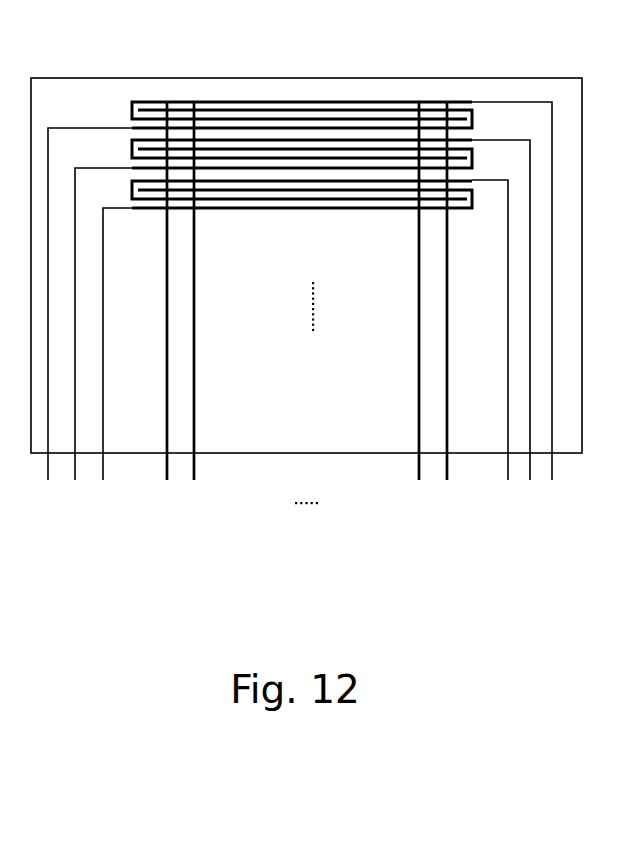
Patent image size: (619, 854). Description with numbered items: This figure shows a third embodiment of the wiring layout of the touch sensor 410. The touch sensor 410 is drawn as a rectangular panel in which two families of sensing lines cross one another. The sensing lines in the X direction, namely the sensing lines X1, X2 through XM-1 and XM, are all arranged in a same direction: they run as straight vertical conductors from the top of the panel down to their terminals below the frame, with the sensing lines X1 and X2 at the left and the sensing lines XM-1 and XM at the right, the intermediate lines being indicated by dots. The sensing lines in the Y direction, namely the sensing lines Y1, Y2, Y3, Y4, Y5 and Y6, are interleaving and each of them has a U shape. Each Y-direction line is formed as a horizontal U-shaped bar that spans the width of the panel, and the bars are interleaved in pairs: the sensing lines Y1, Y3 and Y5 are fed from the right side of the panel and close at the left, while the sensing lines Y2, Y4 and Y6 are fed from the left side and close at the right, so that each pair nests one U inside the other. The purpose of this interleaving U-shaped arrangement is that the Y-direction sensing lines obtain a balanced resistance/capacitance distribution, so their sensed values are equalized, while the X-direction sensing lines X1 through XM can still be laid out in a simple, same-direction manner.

The touch sensor 410 is at (303, 78).
The sensing line Y1 is at (349, 306).
The sensing line Y2 is at (254, 310).
The sensing line Y3 is at (335, 325).
The sensing line Y4 is at (267, 330).
The sensing line Y5 is at (323, 345).
The sensing line Y6 is at (281, 350).
The sensing line X1 is at (167, 306).
The sensing line X2 is at (197, 306).
The sensing line XM-1 is at (405, 306).
The sensing line XM is at (449, 306).